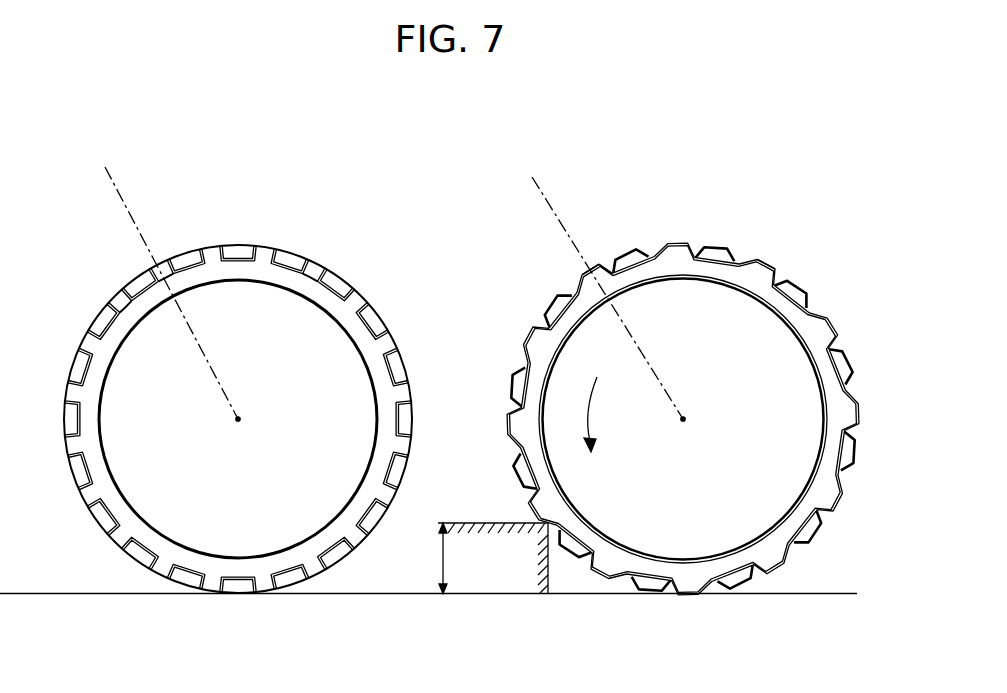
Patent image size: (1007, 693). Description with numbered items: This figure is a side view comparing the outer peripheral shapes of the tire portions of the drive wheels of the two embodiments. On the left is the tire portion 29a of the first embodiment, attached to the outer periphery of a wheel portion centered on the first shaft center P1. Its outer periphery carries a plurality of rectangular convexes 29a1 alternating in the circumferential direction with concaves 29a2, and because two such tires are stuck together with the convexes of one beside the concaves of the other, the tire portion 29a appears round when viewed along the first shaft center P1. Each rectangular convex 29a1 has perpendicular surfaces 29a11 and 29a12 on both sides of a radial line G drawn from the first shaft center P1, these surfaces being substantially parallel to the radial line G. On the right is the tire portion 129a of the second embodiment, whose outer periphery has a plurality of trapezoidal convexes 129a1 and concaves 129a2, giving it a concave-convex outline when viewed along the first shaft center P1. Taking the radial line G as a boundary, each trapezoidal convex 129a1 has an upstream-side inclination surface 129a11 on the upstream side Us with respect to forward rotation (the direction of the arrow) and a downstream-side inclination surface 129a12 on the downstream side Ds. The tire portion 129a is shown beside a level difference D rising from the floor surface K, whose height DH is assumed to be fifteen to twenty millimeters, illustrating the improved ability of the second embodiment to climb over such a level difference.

The tire portion 29a is at (238, 369).
The rectangular convex 29a1 is at (312, 262).
The concave 29a2 is at (338, 282).
The perpendicular surface 29a11 is at (183, 262).
The perpendicular surface 29a12 is at (163, 272).
The tire portion 129a is at (666, 370).
The trapezoidal convex 129a1 is at (765, 262).
The concave 129a2 is at (797, 288).
The upstream-side inclination surface 129a11 is at (601, 262).
The downstream-side inclination surface 129a12 is at (580, 282).
The radial line G is at (192, 323).
The first shaft center P1 is at (469, 437).
The downstream side Ds is at (517, 201).
The upstream side Us is at (559, 181).
The level difference D is at (548, 553).
The height DH is at (460, 558).
The floor surface K is at (829, 592).